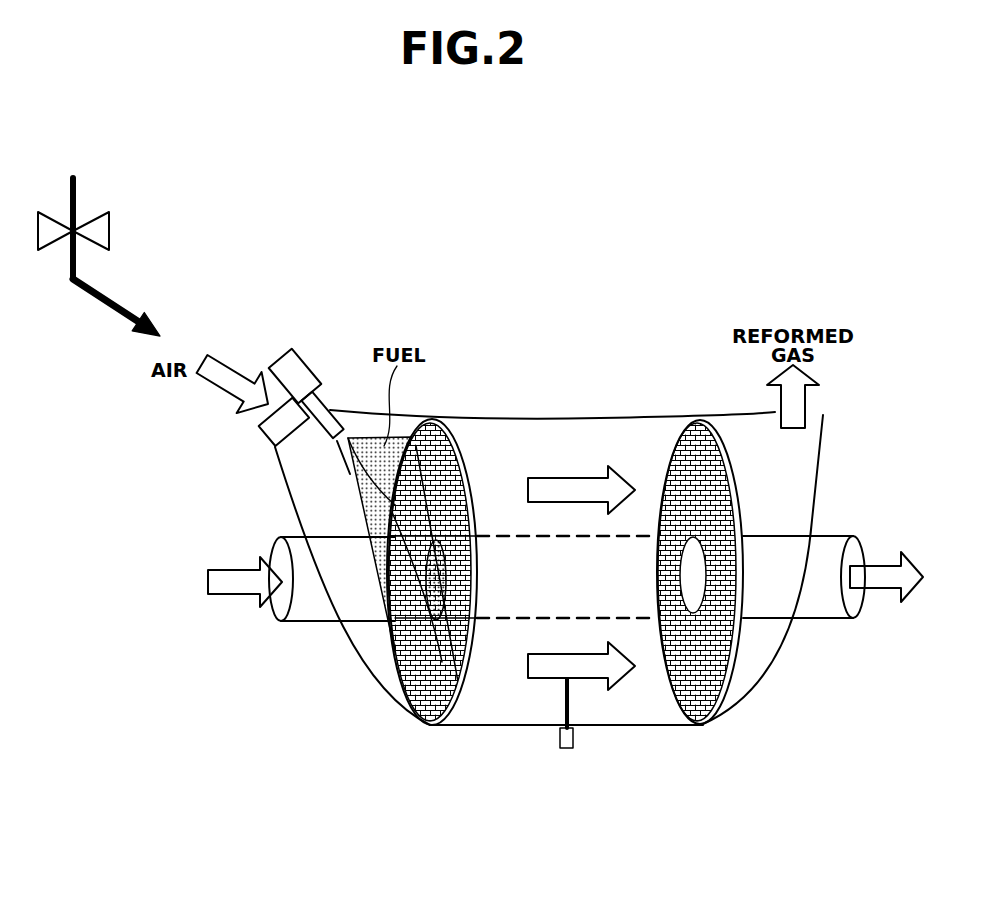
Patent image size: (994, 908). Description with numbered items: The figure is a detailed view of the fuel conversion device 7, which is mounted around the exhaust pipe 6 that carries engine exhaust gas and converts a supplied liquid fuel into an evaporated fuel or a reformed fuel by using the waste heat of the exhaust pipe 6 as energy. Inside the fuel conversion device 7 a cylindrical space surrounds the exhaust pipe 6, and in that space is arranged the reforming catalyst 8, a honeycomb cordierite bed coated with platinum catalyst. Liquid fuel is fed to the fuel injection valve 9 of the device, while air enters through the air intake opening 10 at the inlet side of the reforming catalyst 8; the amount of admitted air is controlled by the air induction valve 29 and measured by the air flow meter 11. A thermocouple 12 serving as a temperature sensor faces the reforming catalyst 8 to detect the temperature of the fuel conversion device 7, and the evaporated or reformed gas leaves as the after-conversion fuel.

The air induction valve 29 is at (98, 214).
The fuel injection valve 9 is at (290, 352).
The air intake opening 10 is at (257, 427).
The air flow meter 11 is at (272, 446).
The fuel conversion device 7 is at (666, 328).
The reforming catalyst 8 is at (579, 426).
The exhaust pipe 6 is at (310, 622).
The thermocouple 12 is at (566, 750).